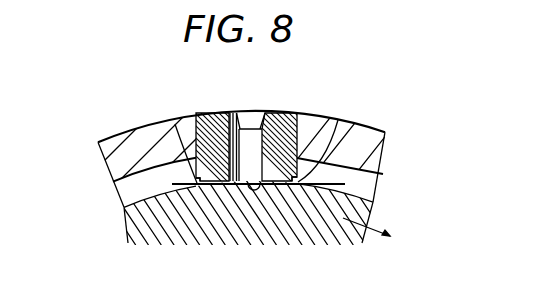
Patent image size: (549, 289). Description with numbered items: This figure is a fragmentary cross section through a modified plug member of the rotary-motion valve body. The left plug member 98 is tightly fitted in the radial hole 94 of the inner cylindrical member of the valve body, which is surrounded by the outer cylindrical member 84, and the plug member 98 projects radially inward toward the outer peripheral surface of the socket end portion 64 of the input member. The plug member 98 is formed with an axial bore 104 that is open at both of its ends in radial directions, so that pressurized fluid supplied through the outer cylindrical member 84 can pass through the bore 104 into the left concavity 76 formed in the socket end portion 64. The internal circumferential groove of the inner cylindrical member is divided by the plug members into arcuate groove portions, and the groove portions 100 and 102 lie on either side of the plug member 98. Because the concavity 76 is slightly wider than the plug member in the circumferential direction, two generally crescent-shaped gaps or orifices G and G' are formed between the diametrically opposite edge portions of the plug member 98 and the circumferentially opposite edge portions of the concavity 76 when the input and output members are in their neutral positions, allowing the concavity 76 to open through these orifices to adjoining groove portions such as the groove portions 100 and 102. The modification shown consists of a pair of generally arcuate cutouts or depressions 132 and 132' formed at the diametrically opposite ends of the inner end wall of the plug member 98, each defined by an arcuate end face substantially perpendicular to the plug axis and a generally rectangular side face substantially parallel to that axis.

The outer cylindrical member 84 is at (143, 130).
The crescent-shaped gap or orifice G is at (177, 128).
The left plug member 98 is at (213, 120).
The axial bore 104 is at (247, 117).
The radial hole 94 is at (287, 118).
The crescent-shaped gap or orifice G' is at (332, 128).
The groove portion 102 is at (124, 199).
The groove portion 100 is at (365, 187).
The socket end portion 64 is at (127, 230).
The arcuate cutout or depression 132 is at (187, 232).
The left concavity 76 is at (258, 189).
The arcuate cutout or depression 132' is at (300, 231).